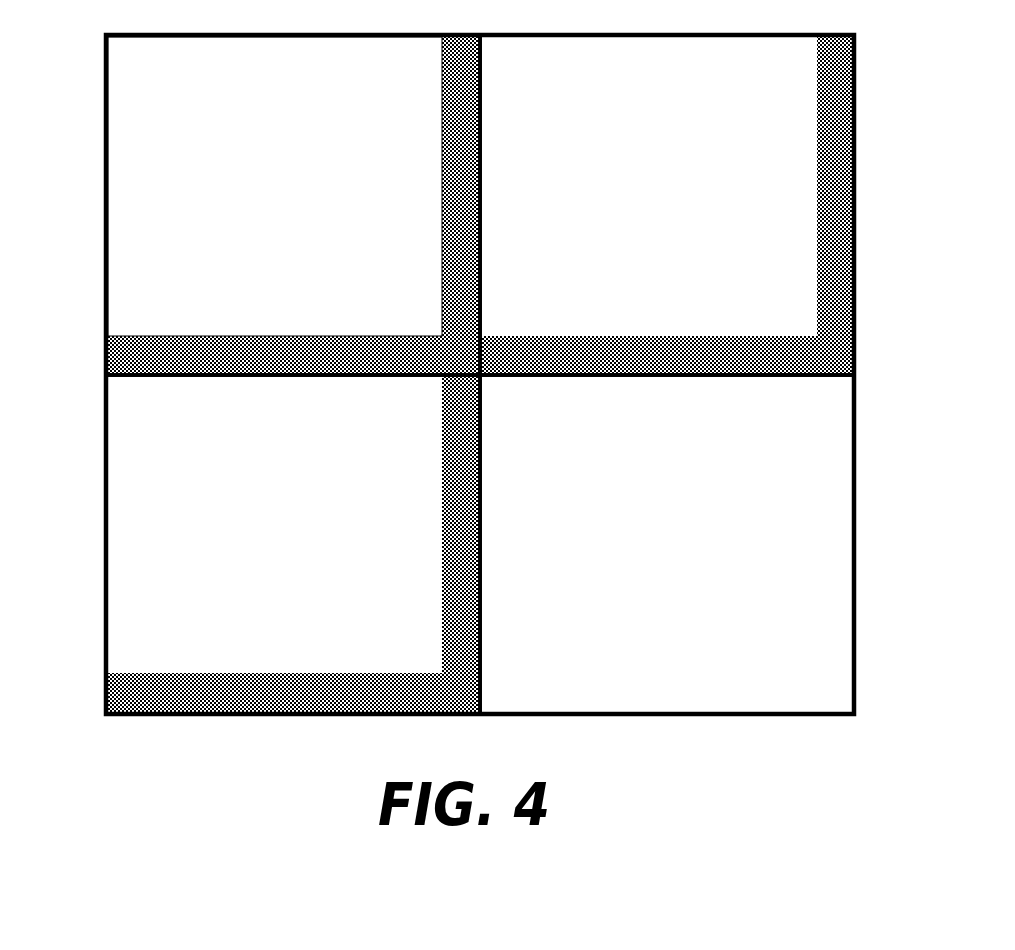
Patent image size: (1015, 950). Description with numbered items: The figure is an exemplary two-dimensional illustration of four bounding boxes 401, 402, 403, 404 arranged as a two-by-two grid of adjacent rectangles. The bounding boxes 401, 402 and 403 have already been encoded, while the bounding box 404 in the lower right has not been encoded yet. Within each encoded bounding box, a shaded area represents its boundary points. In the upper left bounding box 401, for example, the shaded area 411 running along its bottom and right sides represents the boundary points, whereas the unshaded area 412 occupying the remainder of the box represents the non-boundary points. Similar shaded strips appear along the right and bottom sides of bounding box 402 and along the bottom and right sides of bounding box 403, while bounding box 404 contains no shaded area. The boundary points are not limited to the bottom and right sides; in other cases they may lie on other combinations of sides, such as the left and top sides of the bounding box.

The bounding box 401 is at (104, 110).
The bounding box 402 is at (856, 92).
The bounding box 403 is at (104, 525).
The bounding box 404 is at (856, 549).
The shaded area 411 is at (125, 357).
The area 412 is at (125, 205).